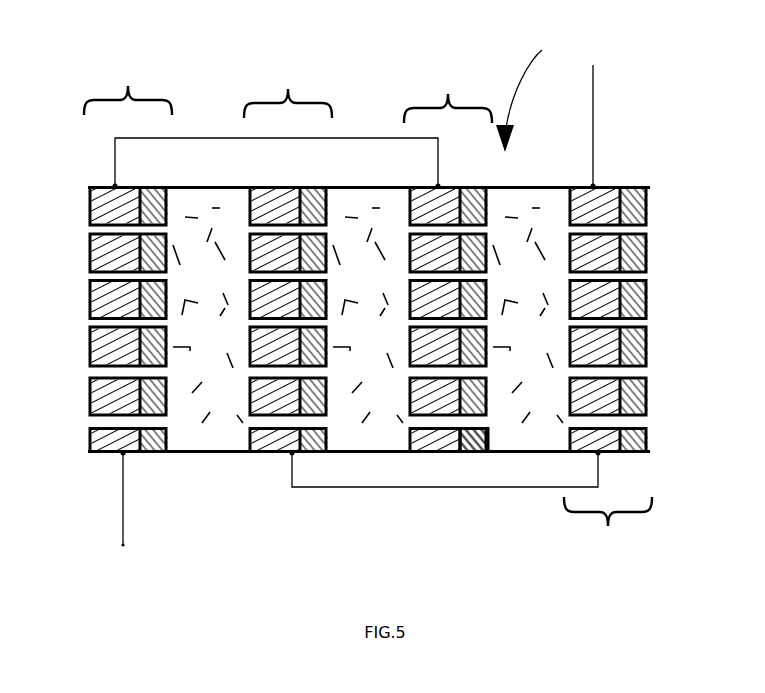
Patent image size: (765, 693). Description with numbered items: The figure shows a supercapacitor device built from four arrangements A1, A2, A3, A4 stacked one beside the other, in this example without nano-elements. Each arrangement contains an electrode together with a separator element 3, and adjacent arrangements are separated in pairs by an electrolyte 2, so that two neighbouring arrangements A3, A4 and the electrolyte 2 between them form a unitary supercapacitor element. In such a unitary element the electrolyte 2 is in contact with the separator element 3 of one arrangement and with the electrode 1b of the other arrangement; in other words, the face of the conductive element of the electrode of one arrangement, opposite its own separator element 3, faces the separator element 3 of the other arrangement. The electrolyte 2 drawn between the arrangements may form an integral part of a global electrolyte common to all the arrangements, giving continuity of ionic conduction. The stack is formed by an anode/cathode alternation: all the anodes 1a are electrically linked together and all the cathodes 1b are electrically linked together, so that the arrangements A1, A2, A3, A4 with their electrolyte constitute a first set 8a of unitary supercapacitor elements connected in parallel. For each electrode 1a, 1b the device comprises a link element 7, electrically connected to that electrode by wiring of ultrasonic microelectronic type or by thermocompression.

The anode 1a is at (110, 443).
The cathode 1b is at (605, 197).
The electrolyte 2 is at (522, 200).
The separator element 3 is at (473, 450).
The link element 7 is at (195, 138).
The first set of unitary supercapacitor elements 8a is at (529, 93).
The arrangement A1 is at (128, 86).
The arrangement A2 is at (288, 90).
The arrangement A3 is at (448, 97).
The arrangement A4 is at (608, 527).